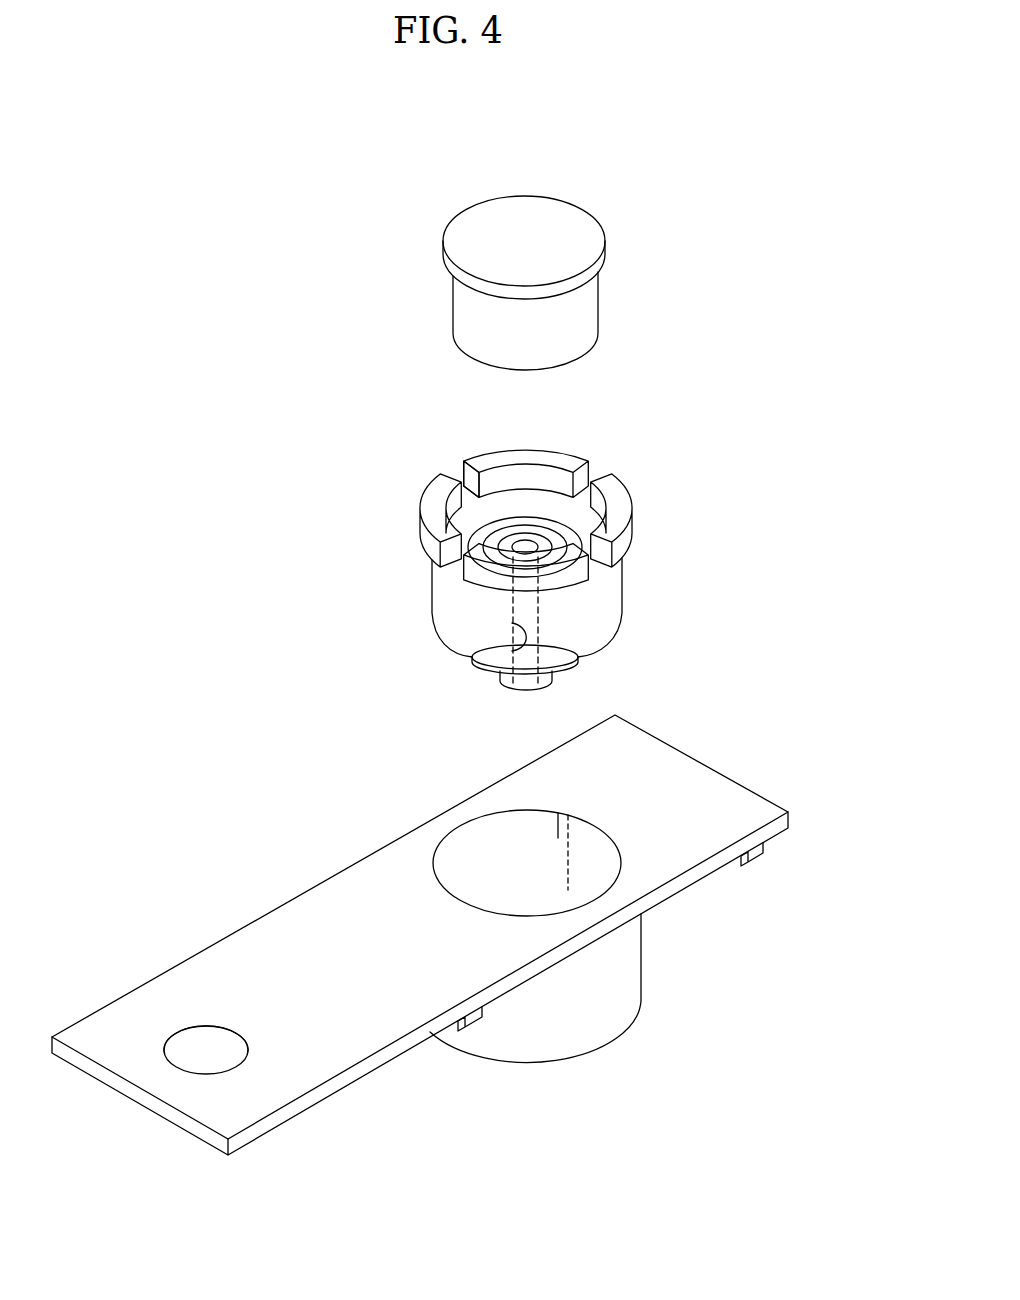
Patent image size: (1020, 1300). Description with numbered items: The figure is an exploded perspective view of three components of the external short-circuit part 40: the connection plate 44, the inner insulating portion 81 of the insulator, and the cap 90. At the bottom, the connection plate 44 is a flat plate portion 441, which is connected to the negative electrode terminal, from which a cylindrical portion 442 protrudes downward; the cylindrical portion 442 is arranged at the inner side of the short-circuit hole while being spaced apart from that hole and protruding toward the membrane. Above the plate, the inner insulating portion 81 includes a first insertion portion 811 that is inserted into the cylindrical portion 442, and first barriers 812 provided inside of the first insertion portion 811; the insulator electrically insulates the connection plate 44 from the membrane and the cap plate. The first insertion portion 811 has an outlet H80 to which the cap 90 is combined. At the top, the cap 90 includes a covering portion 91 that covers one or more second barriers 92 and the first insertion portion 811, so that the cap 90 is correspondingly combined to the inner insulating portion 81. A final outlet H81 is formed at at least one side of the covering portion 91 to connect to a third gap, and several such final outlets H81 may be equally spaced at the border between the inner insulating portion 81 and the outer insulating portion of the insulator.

The external short-circuit part 40 is at (302, 219).
The cap 90 is at (580, 208).
The covering portion 91 is at (585, 247).
The second barriers 92 is at (585, 306).
The inner insulating portion 81 is at (628, 495).
The first barriers 812 is at (543, 540).
The final outlet H81 is at (587, 480).
The first insertion portion 811 is at (593, 618).
The outlet H80 is at (445, 649).
The connection plate 44 is at (795, 940).
The plate portion 441 is at (658, 855).
The cylindrical portion 442 is at (612, 982).